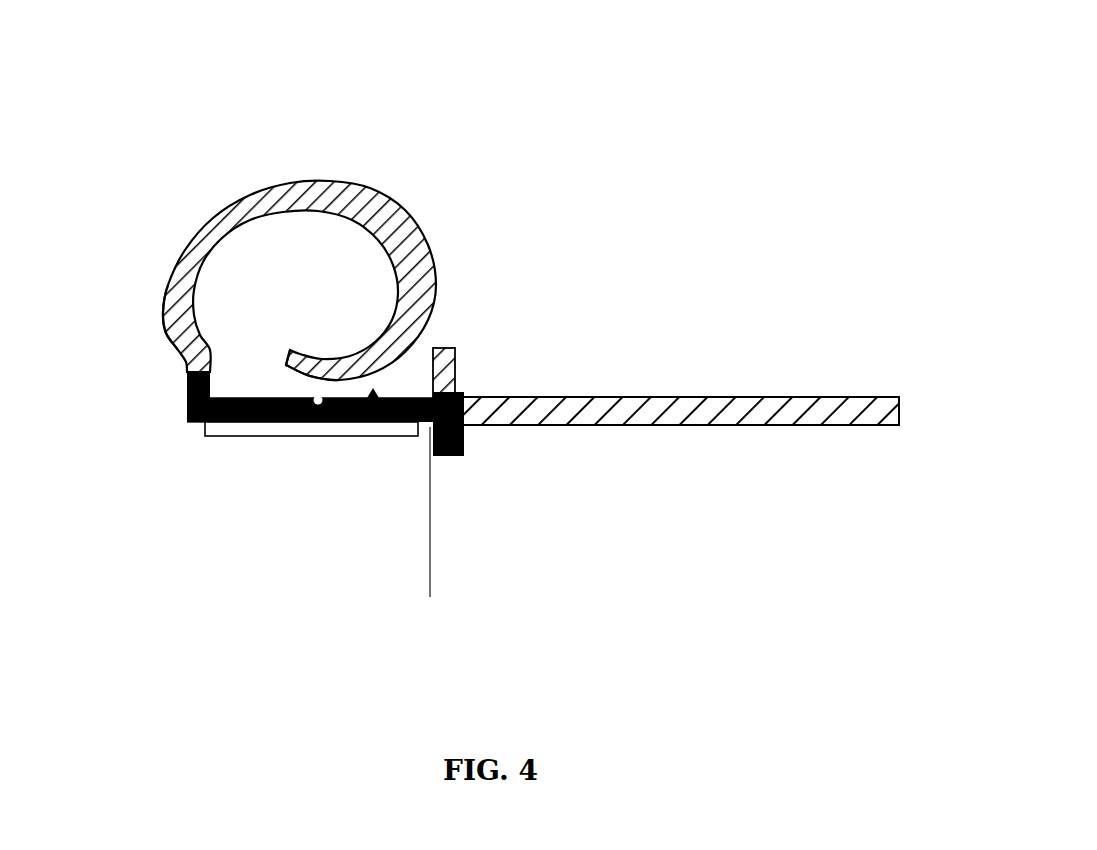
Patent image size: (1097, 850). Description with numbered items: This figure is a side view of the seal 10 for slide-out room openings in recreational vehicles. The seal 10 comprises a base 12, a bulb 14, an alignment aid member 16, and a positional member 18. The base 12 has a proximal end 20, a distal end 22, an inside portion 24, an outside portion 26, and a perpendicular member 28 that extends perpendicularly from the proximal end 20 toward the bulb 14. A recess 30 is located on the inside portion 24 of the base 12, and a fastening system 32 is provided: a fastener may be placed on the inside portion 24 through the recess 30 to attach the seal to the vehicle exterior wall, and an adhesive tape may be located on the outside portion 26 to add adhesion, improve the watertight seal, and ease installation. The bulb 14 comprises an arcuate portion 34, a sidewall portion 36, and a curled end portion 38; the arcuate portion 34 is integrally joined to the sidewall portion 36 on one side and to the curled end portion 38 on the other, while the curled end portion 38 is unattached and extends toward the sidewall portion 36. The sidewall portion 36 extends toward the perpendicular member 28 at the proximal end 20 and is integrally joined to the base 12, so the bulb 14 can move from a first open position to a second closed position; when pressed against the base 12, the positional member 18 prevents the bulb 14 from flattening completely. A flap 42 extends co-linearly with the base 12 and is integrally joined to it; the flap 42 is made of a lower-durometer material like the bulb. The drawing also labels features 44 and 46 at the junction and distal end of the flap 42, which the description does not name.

The seal 10 is at (514, 319).
The base 12 is at (332, 450).
The bulb 14 is at (268, 245).
The alignment aid member 16 is at (466, 459).
The positional member 18 is at (455, 350).
The proximal end 20 is at (190, 428).
The distal end 22 is at (444, 528).
The inside portion 24 is at (261, 394).
The outside portion 26 is at (283, 400).
The perpendicular member 28 is at (187, 400).
The recess 30 is at (318, 394).
The fastening system 32 is at (298, 440).
The arcuate portion 34 is at (283, 182).
The sidewall portion 36 is at (163, 303).
The curled end portion 38 is at (348, 348).
The flap 42 is at (718, 452).
The junction of strip and base 44 is at (467, 427).
The distal end of strip 46 is at (900, 427).